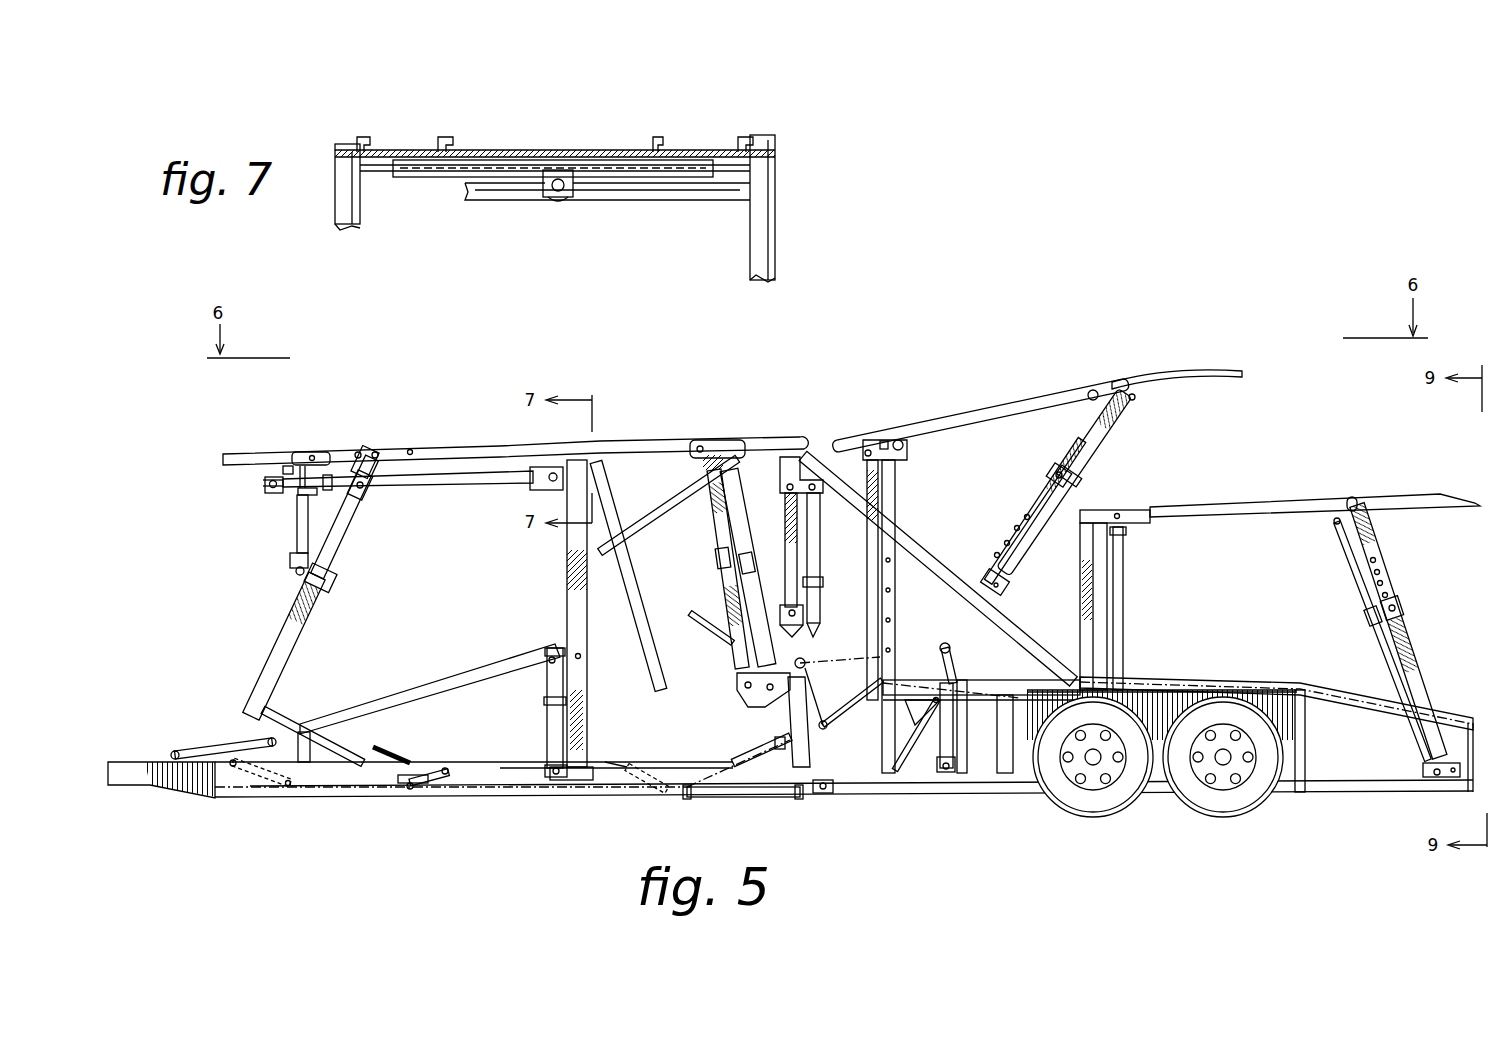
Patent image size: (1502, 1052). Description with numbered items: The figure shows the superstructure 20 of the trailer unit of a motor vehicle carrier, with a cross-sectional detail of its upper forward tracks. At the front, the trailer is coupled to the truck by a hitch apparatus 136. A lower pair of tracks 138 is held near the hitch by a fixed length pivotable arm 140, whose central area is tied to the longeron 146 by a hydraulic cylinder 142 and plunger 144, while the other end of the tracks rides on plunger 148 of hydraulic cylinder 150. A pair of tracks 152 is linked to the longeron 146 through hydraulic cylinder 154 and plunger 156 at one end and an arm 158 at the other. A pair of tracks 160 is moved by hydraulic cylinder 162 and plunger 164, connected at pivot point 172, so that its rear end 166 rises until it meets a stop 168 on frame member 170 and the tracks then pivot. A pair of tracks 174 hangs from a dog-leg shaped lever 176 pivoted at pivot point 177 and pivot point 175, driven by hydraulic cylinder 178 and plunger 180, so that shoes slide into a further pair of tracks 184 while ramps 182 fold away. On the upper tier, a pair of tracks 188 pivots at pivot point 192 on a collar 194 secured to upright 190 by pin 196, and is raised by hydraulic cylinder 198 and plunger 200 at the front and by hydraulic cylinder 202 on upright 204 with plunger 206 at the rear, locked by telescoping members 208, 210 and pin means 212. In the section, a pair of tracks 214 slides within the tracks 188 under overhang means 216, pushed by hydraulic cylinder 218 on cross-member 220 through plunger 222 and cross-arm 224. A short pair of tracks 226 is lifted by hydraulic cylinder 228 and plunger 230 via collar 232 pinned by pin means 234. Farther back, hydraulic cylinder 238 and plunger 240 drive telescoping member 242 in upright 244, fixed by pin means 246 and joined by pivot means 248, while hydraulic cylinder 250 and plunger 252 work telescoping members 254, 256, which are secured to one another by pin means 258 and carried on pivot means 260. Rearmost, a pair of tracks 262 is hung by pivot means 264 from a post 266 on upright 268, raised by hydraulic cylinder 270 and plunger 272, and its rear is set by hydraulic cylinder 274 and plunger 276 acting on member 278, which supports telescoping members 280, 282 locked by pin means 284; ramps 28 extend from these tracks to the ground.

In FIG. 5, the superstructure 20 is at (645, 440).
In FIG. 5, the ramps 28 is at (1462, 500).
In FIG. 5, the hitch apparatus 136 is at (165, 790).
In FIG. 5, the pair of tracks 138 is at (470, 670).
In FIG. 5, the pivotable arm 140 is at (205, 750).
In FIG. 5, the hydraulic cylinder 142 is at (270, 786).
In FIG. 5, the plunger 144 is at (233, 782).
In FIG. 5, the longeron 146 is at (355, 798).
In FIG. 5, the plunger 148 is at (546, 686).
In FIG. 5, the hydraulic cylinder 150 is at (546, 722).
In FIG. 5, the pair of tracks 152 is at (505, 770).
In FIG. 5, the hydraulic cylinder 154 is at (412, 790).
In FIG. 5, the plunger 156 is at (448, 780).
In FIG. 5, the arm 158 is at (640, 782).
In FIG. 5, the pair of tracks 160 is at (865, 776).
In FIG. 5, the hydraulic cylinder 162 is at (953, 735).
In FIG. 5, the plunger 164 is at (955, 668).
In FIG. 5, the rear end 166 is at (1030, 680).
In FIG. 5, the stop 168 is at (1012, 640).
In FIG. 5, the frame member 170 is at (735, 758).
In FIG. 5, the pivot point 172 is at (920, 745).
In FIG. 5, the pair of tracks 174 is at (896, 660).
In FIG. 5, the pivot point 175 is at (808, 662).
In FIG. 5, the dog-leg shaped lever 176 is at (835, 725).
In FIG. 5, the pivot point 177 is at (920, 772).
In FIG. 5, the hydraulic cylinder 178 is at (740, 798).
In FIG. 5, the plunger 180 is at (825, 795).
In FIG. 5, the ramps 182 is at (705, 620).
In FIG. 5, the pair of tracks 184 is at (1270, 683).
In FIG. 7, the pair of tracks 188 is at (655, 135).
In FIG. 5, the pair of tracks 188 is at (327, 452).
In FIG. 7, the upright 190 is at (778, 212).
In FIG. 5, the upright 190 is at (300, 612).
In FIG. 5, the pivot point 192 is at (373, 457).
In FIG. 5, the collar 194 is at (368, 497).
In FIG. 5, the pin 196 is at (410, 450).
In FIG. 5, the hydraulic cylinder 198 is at (295, 530).
In FIG. 5, the plunger 200 is at (265, 490).
In FIG. 5, the hydraulic cylinder 202 is at (765, 590).
In FIG. 5, the upright 204 is at (822, 568).
In FIG. 5, the plunger 206 is at (735, 462).
In FIG. 5, the telescoping member 208 is at (725, 580).
In FIG. 5, the telescoping member 210 is at (688, 440).
In FIG. 5, the pin means 212 is at (718, 555).
In FIG. 7, the pair of tracks 214 is at (420, 150).
In FIG. 7, the overhang means 216 is at (366, 137).
In FIG. 7, the hydraulic cylinder 218 is at (570, 197).
In FIG. 5, the hydraulic cylinder 218 is at (420, 487).
In FIG. 7, the cross-member 220 is at (503, 200).
In FIG. 5, the plunger 222 is at (290, 466).
In FIG. 7, the cross-arm 224 is at (675, 190).
In FIG. 5, the pair of tracks 226 is at (795, 468).
In FIG. 5, the hydraulic cylinder 228 is at (812, 612).
In FIG. 5, the plunger 230 is at (820, 545).
In FIG. 5, the collar 232 is at (845, 447).
In FIG. 5, the pin means 234 is at (800, 513).
In FIG. 5, the hydraulic cylinder 238 is at (912, 500).
In FIG. 5, the plunger 240 is at (875, 448).
In FIG. 5, the telescoping member 242 is at (897, 470).
In FIG. 5, the upright 244 is at (895, 560).
In FIG. 5, the pin means 246 is at (910, 530).
In FIG. 5, the pivot means 248 is at (886, 442).
In FIG. 5, the hydraulic cylinder 250 is at (1078, 492).
In FIG. 5, the plunger 252 is at (1122, 432).
In FIG. 5, the telescoping member 254 is at (1076, 428).
In FIG. 5, the telescoping member 256 is at (1040, 515).
In FIG. 5, the cylinder body 258 is at (1040, 540).
In FIG. 5, the pivot means 260 is at (1115, 384).
In FIG. 5, the pair of tracks 262 is at (1240, 507).
In FIG. 5, the pivot means 264 is at (1122, 540).
In FIG. 5, the post 266 is at (1105, 510).
In FIG. 5, the upright 268 is at (1100, 620).
In FIG. 5, the hydraulic cylinder 270 is at (1140, 620).
In FIG. 5, the plunger 272 is at (1122, 560).
In FIG. 5, the hydraulic cylinder 274 is at (1375, 640).
In FIG. 5, the plunger 276 is at (1348, 566).
In FIG. 5, the member 278 is at (1343, 512).
In FIG. 5, the telescoping member 280 is at (1415, 662).
In FIG. 5, the telescoping member 282 is at (1400, 583).
In FIG. 5, the pin means 284 is at (1405, 607).